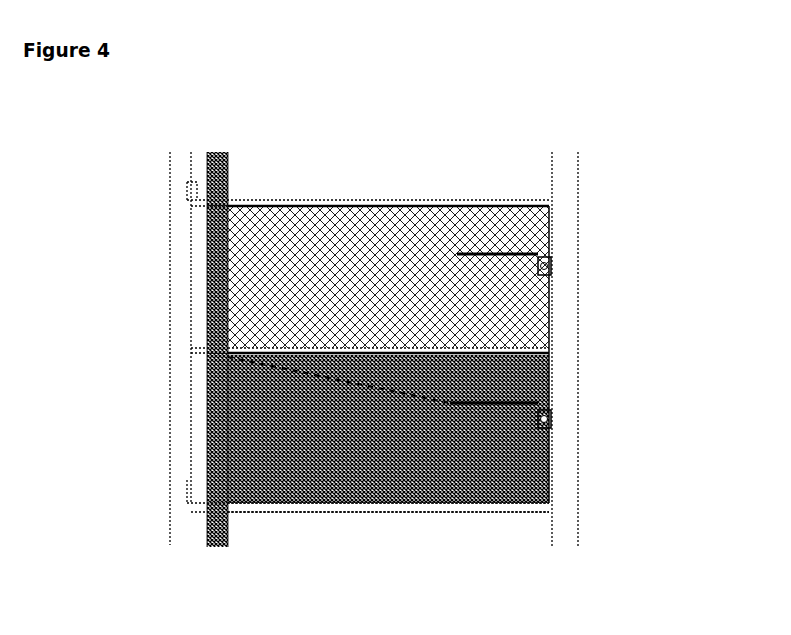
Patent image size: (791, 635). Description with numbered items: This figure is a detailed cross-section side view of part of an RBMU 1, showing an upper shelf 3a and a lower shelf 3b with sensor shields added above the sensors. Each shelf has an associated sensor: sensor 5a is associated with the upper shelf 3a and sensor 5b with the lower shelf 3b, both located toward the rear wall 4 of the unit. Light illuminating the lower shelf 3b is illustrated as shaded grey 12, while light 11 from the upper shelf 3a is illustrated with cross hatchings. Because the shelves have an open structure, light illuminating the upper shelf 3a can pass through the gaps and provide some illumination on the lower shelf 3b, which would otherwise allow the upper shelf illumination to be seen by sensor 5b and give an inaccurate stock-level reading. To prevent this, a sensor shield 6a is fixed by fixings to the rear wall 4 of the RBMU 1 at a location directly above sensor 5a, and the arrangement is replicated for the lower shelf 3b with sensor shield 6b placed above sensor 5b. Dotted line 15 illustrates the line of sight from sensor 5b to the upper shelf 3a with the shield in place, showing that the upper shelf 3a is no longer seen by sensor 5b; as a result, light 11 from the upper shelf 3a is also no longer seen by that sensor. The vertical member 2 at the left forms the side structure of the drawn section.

The RBMU 1 is at (379, 152).
The vertical post 2 is at (228, 280).
The upper shelf 3a is at (390, 348).
The lower shelf 3b is at (432, 510).
The rear wall 4 is at (552, 488).
The sensor 5a is at (550, 257).
The sensor 5b is at (552, 415).
The sensor shield 6a is at (507, 252).
The sensor shield 6b is at (530, 400).
The light 11 is at (269, 213).
The shaded grey 12 is at (258, 477).
The dotted line 15 is at (512, 415).